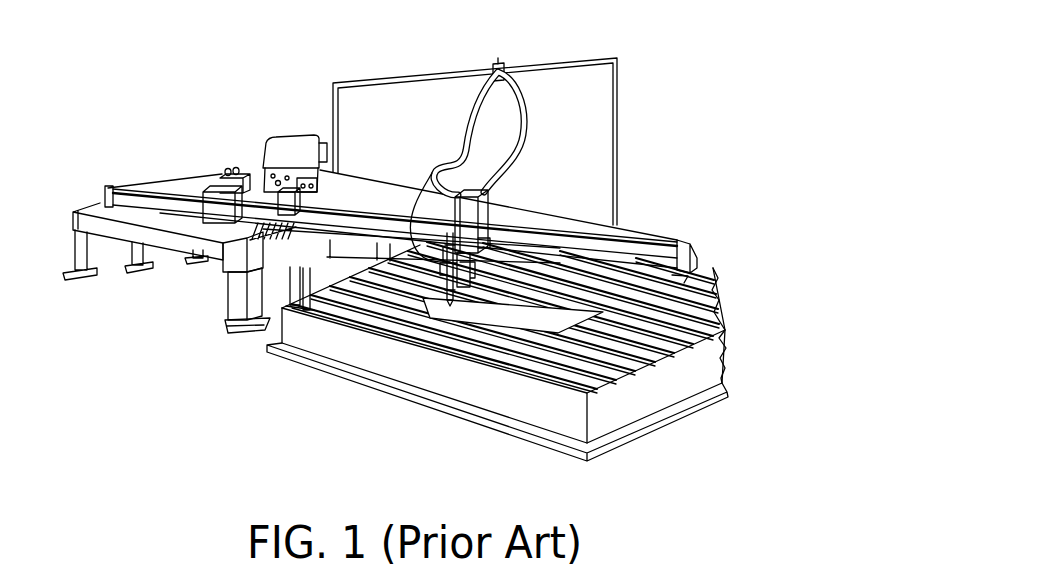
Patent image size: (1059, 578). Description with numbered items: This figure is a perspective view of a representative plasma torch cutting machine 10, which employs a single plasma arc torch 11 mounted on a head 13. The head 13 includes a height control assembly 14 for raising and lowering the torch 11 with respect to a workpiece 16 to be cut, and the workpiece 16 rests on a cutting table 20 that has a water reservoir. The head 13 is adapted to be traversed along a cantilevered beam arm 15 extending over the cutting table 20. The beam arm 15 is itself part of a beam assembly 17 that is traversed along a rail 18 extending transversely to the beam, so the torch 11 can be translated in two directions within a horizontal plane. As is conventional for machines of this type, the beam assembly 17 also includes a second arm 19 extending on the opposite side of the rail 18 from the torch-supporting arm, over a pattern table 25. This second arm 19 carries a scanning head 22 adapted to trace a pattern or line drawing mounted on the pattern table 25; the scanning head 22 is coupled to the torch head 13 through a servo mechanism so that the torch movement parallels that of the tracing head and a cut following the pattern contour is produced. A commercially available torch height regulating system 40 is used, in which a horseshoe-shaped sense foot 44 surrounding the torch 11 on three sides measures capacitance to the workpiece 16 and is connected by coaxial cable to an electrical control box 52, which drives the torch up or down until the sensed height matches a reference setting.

The plasma torch cutting machine 10 is at (656, 174).
The plasma arc torch 11 is at (447, 252).
The head 13 is at (477, 204).
The height control assembly 14 is at (463, 231).
The cantilevered beam arm 15 is at (653, 247).
The workpiece 16 is at (506, 308).
The beam assembly 17 is at (293, 124).
The rail 18 is at (267, 238).
The second arm 19 is at (137, 202).
The cutting table 20 is at (632, 402).
The scanning head 22 is at (212, 207).
The pattern table 25 is at (178, 222).
The torch height regulating system 40 is at (550, 190).
The sense foot 44 is at (433, 167).
The electrical control box 52 is at (222, 172).